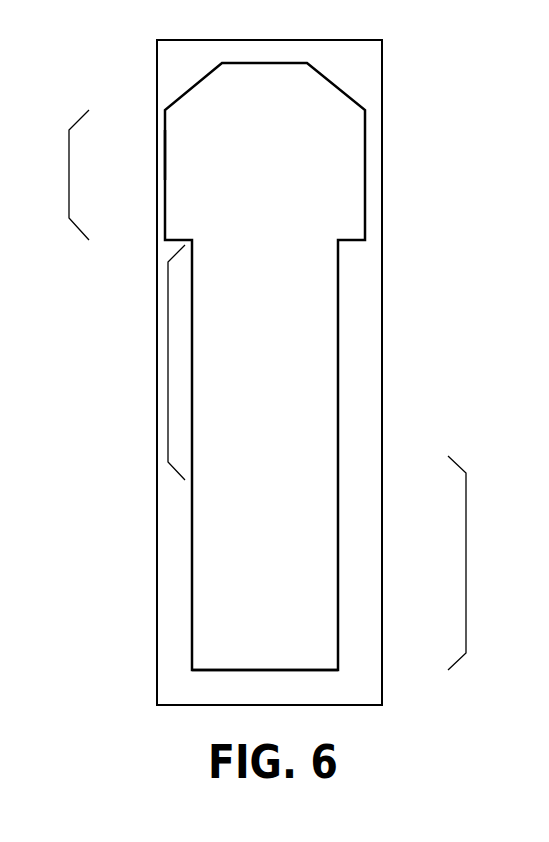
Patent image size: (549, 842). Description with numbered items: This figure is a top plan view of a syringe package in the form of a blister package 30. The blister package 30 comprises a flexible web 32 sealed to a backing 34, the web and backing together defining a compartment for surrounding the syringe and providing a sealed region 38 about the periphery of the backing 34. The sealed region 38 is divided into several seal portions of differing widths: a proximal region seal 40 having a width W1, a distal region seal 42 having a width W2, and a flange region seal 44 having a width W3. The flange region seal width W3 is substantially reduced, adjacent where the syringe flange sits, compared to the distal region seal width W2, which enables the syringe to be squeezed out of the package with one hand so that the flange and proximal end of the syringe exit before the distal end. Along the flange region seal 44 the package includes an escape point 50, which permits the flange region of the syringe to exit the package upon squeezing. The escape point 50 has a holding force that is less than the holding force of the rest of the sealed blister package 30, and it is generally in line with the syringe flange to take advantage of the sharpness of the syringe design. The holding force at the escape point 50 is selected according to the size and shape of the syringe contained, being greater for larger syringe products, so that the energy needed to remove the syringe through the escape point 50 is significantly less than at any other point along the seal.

The blister package 30 is at (411, 337).
The flexible web 32 is at (368, 175).
The backing 34 is at (382, 88).
The sealed region 38 is at (342, 666).
The proximal region seal 40 is at (168, 373).
The distal region seal 42 is at (466, 557).
The flange region seal 44 is at (69, 173).
The escape point 50 is at (170, 157).
The proximal region seal width W1 is at (230, 337).
The distal region seal width W2 is at (310, 580).
The flange region seal width W3 is at (203, 188).